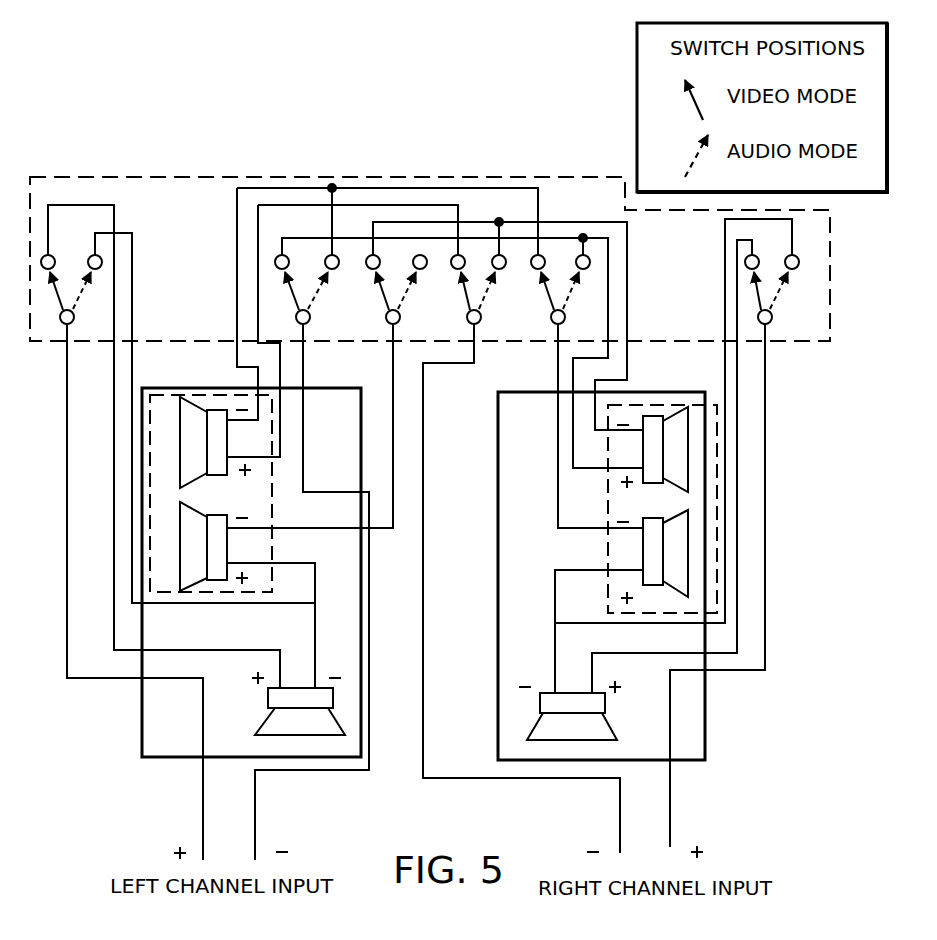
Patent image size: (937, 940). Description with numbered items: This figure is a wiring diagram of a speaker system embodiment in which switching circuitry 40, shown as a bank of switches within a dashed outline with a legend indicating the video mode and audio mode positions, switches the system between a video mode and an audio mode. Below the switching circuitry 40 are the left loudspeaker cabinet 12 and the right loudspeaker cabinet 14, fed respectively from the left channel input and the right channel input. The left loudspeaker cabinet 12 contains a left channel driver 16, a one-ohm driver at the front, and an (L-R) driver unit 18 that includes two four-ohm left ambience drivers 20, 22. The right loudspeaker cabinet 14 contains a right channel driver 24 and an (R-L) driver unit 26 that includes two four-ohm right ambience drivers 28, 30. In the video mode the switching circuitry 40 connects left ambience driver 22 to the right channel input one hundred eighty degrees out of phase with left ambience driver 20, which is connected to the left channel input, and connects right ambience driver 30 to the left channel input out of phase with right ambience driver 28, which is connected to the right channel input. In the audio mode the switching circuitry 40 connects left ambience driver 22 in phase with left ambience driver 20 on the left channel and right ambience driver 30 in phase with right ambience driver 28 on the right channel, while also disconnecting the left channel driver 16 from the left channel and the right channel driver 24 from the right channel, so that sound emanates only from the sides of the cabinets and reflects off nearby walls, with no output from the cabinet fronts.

The switching circuitry 40 is at (363, 177).
The left loudspeaker cabinet 12 is at (317, 388).
The right loudspeaker cabinet 14 is at (523, 388).
The (L-R) driver unit 18 is at (158, 393).
The left ambience driver 22 is at (196, 402).
The left ambience driver 20 is at (220, 536).
The left channel driver 16 is at (332, 712).
The right ambience driver 30 is at (677, 405).
The (R-L) driver unit 26 is at (648, 403).
The right ambience driver 28 is at (687, 512).
The right channel driver 24 is at (608, 721).